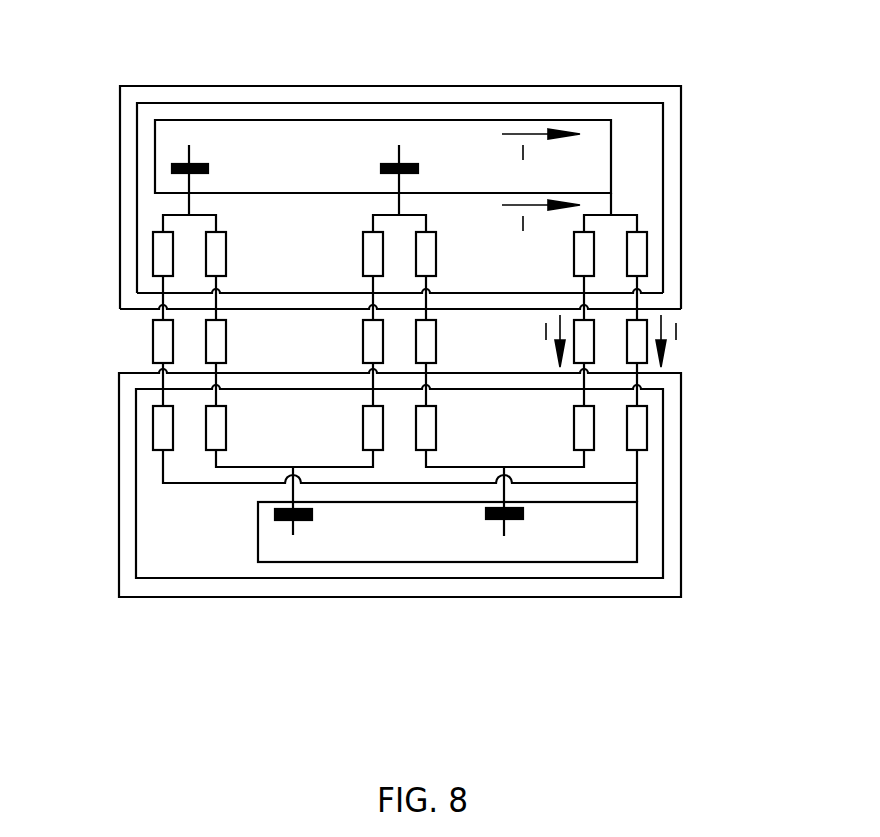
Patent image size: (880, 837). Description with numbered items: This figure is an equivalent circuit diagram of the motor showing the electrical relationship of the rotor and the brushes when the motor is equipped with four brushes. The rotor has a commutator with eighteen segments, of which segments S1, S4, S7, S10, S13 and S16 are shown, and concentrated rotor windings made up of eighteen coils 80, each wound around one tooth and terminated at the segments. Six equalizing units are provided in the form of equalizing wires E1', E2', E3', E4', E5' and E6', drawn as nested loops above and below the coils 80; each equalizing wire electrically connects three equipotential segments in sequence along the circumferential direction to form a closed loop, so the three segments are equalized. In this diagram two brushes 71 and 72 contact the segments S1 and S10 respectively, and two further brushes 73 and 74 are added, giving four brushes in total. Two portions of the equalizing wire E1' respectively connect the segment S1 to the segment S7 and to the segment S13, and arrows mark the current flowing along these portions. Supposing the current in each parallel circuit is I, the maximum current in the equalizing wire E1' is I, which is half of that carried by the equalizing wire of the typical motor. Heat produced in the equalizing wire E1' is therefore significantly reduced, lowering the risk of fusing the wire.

The brush 71 is at (186, 163).
The brush 73 is at (392, 163).
The brush 74 is at (282, 518).
The brush 72 is at (513, 518).
The coil 80 is at (637, 260).
The equalizing wire E1' is at (383, 96).
The equalizing wire E6' is at (400, 146).
The equalizing wire E2' is at (400, 154).
The equalizing wire E3' is at (400, 518).
The equalizing wire E5' is at (399, 526).
The equalizing wire E4' is at (447, 583).
The segment S1 is at (183, 207).
The segment S7 is at (403, 207).
The segment S13 is at (612, 207).
The segment S16 is at (181, 485).
The segment S10 is at (552, 467).
The segment S4 is at (245, 467).